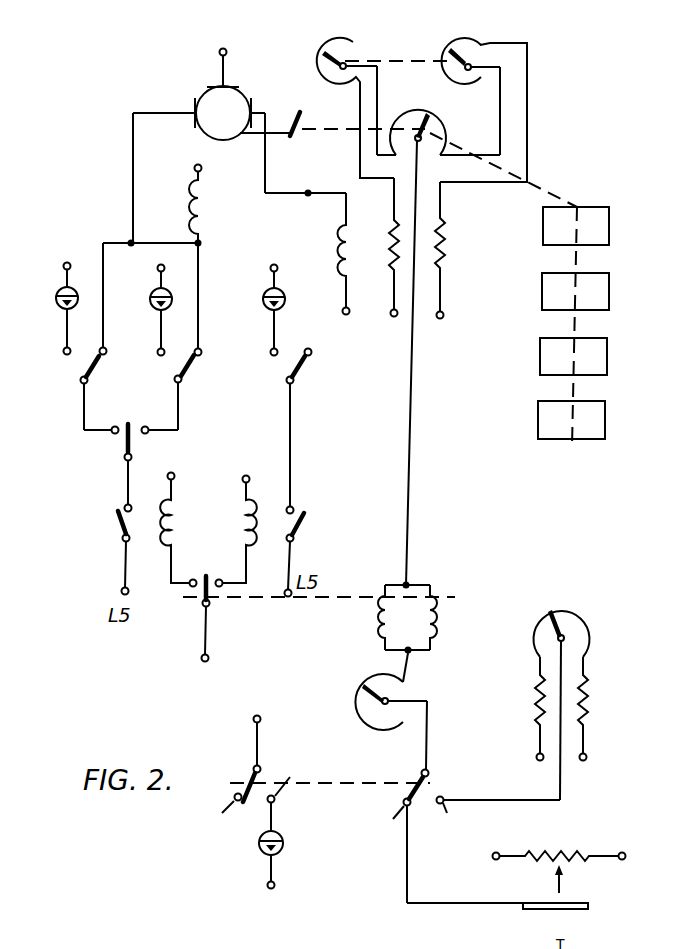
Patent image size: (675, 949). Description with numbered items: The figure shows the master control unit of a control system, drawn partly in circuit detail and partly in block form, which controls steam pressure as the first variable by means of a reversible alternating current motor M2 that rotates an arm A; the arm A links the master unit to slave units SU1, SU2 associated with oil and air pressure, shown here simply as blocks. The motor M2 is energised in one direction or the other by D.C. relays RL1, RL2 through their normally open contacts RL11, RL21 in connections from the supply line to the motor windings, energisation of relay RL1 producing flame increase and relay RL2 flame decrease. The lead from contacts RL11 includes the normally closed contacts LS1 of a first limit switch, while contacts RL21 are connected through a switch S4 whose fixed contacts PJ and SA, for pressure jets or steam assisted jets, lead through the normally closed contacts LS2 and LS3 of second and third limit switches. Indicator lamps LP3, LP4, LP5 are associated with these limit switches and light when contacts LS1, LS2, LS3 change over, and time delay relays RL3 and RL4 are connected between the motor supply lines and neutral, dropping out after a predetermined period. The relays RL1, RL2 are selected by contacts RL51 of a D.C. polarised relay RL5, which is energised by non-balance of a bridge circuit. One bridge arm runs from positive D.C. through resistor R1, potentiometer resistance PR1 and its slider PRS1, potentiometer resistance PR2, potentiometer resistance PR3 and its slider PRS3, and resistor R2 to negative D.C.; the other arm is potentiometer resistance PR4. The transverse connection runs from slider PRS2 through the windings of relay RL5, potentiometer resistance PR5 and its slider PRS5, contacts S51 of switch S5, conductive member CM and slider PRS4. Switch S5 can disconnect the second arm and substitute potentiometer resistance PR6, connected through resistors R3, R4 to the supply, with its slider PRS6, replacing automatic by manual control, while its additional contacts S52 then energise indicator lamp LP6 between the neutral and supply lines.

The reversible alternating current motor M2 is at (210, 97).
The arm A is at (297, 108).
The potentiometer resistance PR1 is at (318, 57).
The slider PRS1 is at (343, 63).
The potentiometer resistance PR2 is at (440, 142).
The slider PRS2 is at (425, 120).
The potentiometer resistance PR3 is at (492, 43).
The slider PRS3 is at (468, 63).
The time delay relay RL4 is at (192, 204).
The time delay relay RL3 is at (342, 240).
The resistor R1 is at (392, 232).
The resistor R2 is at (446, 238).
The slave unit SU1 is at (609, 237).
The slave unit SU2 is at (609, 303).
The indicator lamp LP5 is at (57, 306).
The indicator lamp LP4 is at (151, 306).
The indicator lamp LP3 is at (264, 306).
The normally closed contacts of third limit switch LS3 is at (92, 372).
The normally closed contacts of second limit switch LS2 is at (188, 373).
The normally closed contacts of first limit switch LS1 is at (297, 374).
The fixed contact PJ is at (114, 416).
The fixed contact SA is at (155, 416).
The switch S4 is at (124, 443).
The normally open contacts RL21 is at (118, 527).
The D.C. relay RL2 is at (178, 512).
The D.C. relay RL1 is at (242, 525).
The normally open contacts RL11 is at (297, 531).
The contacts RL51 is at (212, 597).
The D.C. polarised relay RL5 is at (412, 600).
The slider PRS5 is at (366, 690).
The potentiometer resistance PR5 is at (358, 711).
The slider PRS6 is at (556, 618).
The potentiometer resistance PR6 is at (584, 622).
The resistor R3 is at (535, 704).
The resistor R4 is at (589, 706).
The contacts of switch S5 S51 is at (437, 788).
The switch S5 is at (355, 790).
The additional contacts of switch S5 S52 is at (251, 773).
The indicator lamp LP6 is at (258, 852).
The potentiometer resistance PR4 is at (553, 838).
The slider PRS4 is at (562, 888).
The conductive member CM is at (558, 910).